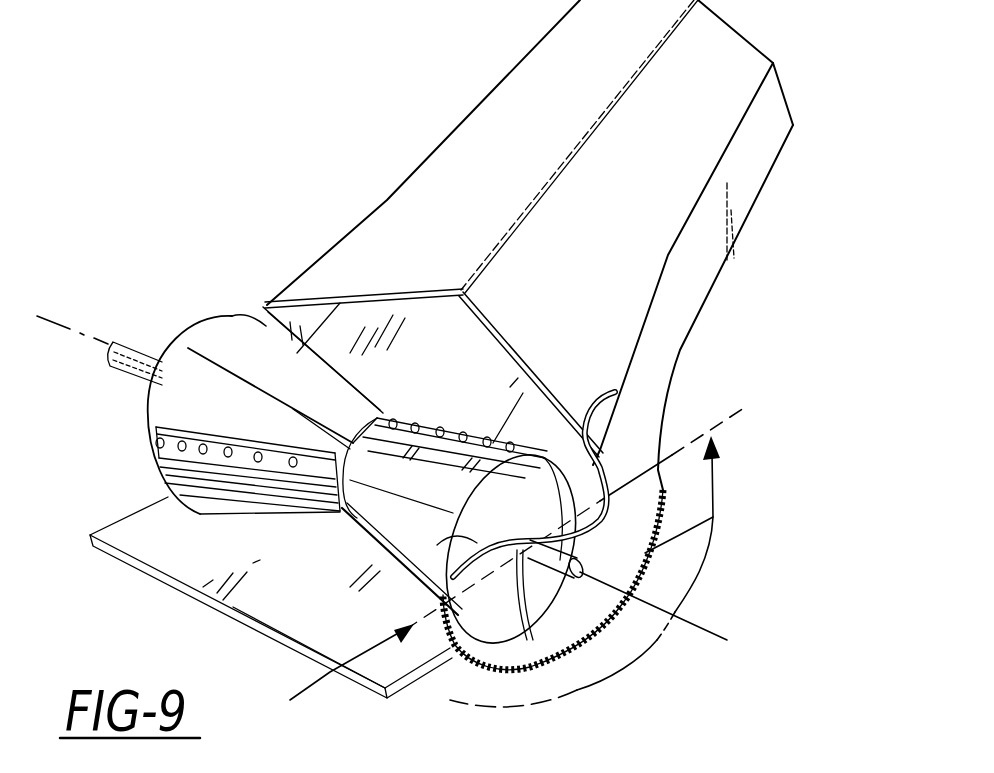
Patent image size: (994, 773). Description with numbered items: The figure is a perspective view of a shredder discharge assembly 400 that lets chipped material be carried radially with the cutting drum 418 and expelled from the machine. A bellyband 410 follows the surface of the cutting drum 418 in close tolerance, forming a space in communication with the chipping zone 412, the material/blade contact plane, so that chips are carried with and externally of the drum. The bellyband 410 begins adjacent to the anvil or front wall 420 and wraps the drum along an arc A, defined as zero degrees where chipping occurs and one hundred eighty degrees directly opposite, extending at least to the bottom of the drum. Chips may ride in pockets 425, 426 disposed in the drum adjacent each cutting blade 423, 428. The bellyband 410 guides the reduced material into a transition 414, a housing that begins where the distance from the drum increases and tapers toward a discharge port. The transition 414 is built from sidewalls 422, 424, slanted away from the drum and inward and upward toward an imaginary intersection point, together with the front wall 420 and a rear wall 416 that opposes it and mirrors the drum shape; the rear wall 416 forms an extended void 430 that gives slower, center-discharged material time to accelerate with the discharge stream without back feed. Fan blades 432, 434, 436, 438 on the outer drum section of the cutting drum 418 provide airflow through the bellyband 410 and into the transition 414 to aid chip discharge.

The discharge assembly 400 is at (284, 102).
The bellyband 410 is at (473, 707).
The chipping zone 412 is at (236, 509).
The transition 414 is at (617, 622).
The rear wall 416 is at (520, 338).
The cutting drum 418 is at (220, 333).
The front wall 420 is at (355, 325).
The sidewall 422 is at (303, 283).
The cutting blade 423 is at (147, 434).
The sidewall 424 is at (660, 348).
The pocket 425 is at (160, 474).
The pocket 426 is at (340, 427).
The cutting blade 428 is at (452, 425).
The extended void 430 is at (427, 317).
The fan blade 432 is at (613, 393).
The fan blade 434 is at (716, 521).
The fan blade 436 is at (478, 542).
The fan blade 438 is at (577, 690).
The arc A is at (718, 485).